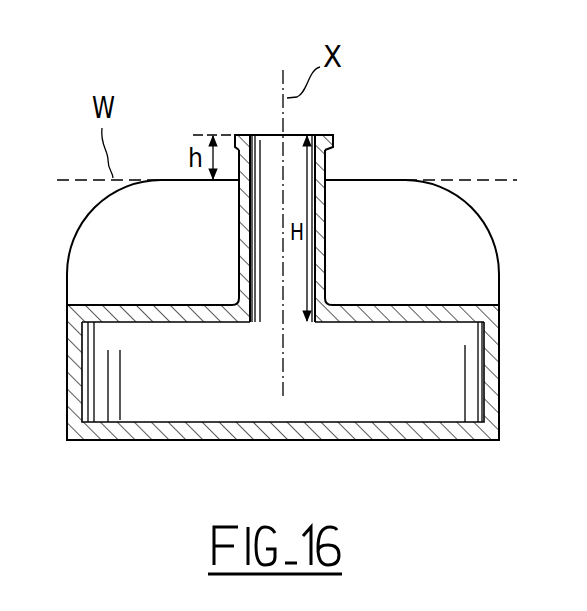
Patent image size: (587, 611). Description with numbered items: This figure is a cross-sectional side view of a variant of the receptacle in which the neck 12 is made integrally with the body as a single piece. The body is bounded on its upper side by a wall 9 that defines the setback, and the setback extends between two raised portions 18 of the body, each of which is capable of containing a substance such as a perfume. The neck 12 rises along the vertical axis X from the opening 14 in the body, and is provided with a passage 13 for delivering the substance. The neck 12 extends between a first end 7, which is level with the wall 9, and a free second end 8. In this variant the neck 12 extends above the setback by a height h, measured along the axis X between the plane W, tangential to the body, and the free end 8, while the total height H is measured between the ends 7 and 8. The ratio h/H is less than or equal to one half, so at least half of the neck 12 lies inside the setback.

The first end of the neck 7 is at (325, 310).
The free second end of the neck 8 is at (243, 133).
The wall of the body 9 is at (123, 312).
The neck 12 is at (237, 257).
The passage 13 is at (300, 148).
The opening 14 is at (270, 305).
The raised portions 18 is at (393, 213).